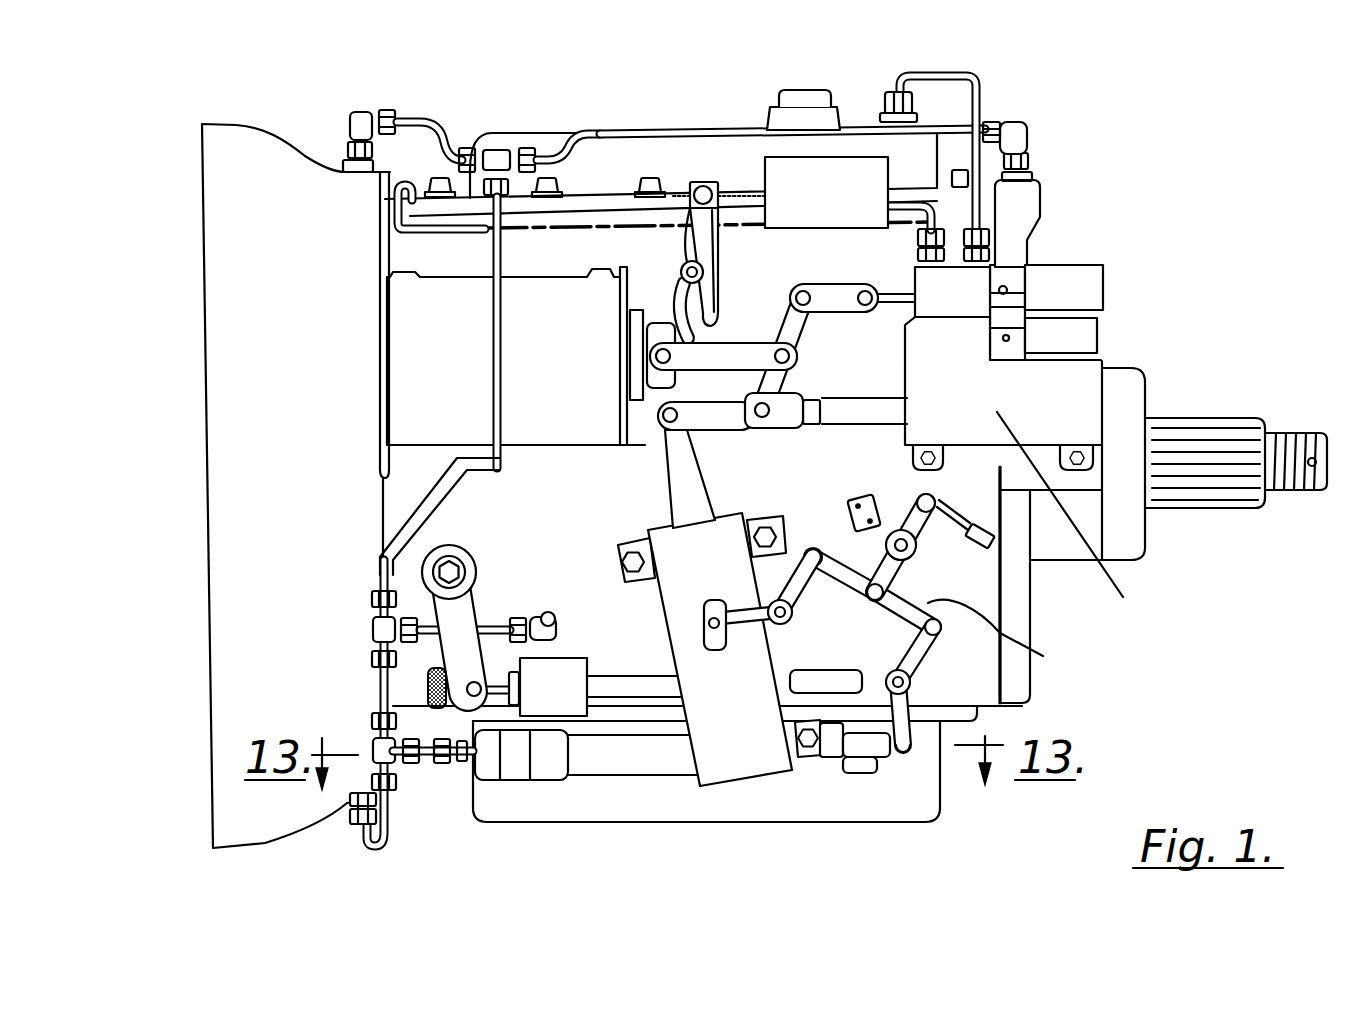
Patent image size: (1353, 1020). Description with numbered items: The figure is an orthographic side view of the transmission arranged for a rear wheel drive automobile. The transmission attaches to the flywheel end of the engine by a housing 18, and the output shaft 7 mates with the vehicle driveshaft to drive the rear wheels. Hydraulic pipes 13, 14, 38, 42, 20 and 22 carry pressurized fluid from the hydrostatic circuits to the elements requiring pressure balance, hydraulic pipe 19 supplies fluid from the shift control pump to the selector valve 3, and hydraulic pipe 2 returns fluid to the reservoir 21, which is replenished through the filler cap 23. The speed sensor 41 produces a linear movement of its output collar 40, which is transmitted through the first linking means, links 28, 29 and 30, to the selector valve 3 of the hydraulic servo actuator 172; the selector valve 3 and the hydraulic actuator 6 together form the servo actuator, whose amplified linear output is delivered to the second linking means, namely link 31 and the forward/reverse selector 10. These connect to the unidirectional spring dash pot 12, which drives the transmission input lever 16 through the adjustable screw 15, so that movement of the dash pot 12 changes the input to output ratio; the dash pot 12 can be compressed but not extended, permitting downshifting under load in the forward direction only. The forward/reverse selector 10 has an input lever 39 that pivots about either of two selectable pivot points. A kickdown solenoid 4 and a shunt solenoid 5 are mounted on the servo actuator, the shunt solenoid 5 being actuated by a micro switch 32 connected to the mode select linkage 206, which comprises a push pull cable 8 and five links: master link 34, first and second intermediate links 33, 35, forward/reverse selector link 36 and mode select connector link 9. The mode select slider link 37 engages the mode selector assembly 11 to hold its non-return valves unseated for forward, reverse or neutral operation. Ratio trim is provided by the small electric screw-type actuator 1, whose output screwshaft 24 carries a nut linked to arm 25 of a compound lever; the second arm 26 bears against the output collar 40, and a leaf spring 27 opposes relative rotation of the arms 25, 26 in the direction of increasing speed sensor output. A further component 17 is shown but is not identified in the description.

The electric screw-type actuator 1 is at (855, 157).
The hydraulic pipe 2 is at (985, 100).
The selector valve 3 is at (990, 262).
The kickdown solenoid 4 is at (1105, 287).
The shunt solenoid 5 is at (1098, 337).
The hydraulic actuator 6 is at (1103, 403).
The output shaft 7 is at (1200, 513).
The push pull cable 8 is at (980, 548).
The mode select connector link 9 is at (917, 673).
The forward/reverse selector 10 is at (750, 780).
The mode selector assembly 11 is at (603, 825).
The unidirectional spring dash pot 12 is at (567, 713).
The hydraulic pipe 13 is at (425, 763).
The hydraulic pipe 14 is at (363, 839).
The adjustable screw 15 is at (428, 690).
The transmission input lever 16 is at (422, 578).
The bracket 17 is at (382, 500).
The housing 18 is at (204, 418).
The hydraulic pipe 19 is at (395, 218).
The hydraulic pipe 20 is at (408, 115).
The reservoir 21 is at (542, 128).
The hydraulic pipe 22 is at (633, 126).
The filler cap 23 is at (790, 95).
The output screwshaft 24 is at (703, 182).
The pivot arm 25 is at (682, 262).
The pivot arm 26 is at (681, 318).
The leaf spring 27 is at (722, 270).
The link 28 is at (736, 343).
The link 29 is at (838, 284).
The link 30 is at (800, 320).
The link 31 is at (718, 430).
The micro switch 32 is at (850, 506).
The first intermediate link 33 is at (838, 566).
The master link 34 is at (923, 543).
The second intermediate link 35 is at (893, 614).
The forward/reverse selector link 36 is at (805, 590).
The mode select slider link 37 is at (863, 773).
The hydraulic pipe 38 is at (505, 618).
The input lever 39 is at (668, 497).
The output collar 40 is at (660, 424).
The speed sensor 41 is at (545, 445).
The hydraulic pipe 42 is at (490, 333).
The hydraulic servo actuator 172 is at (1077, 522).
The mode select linkage 206 is at (1010, 636).